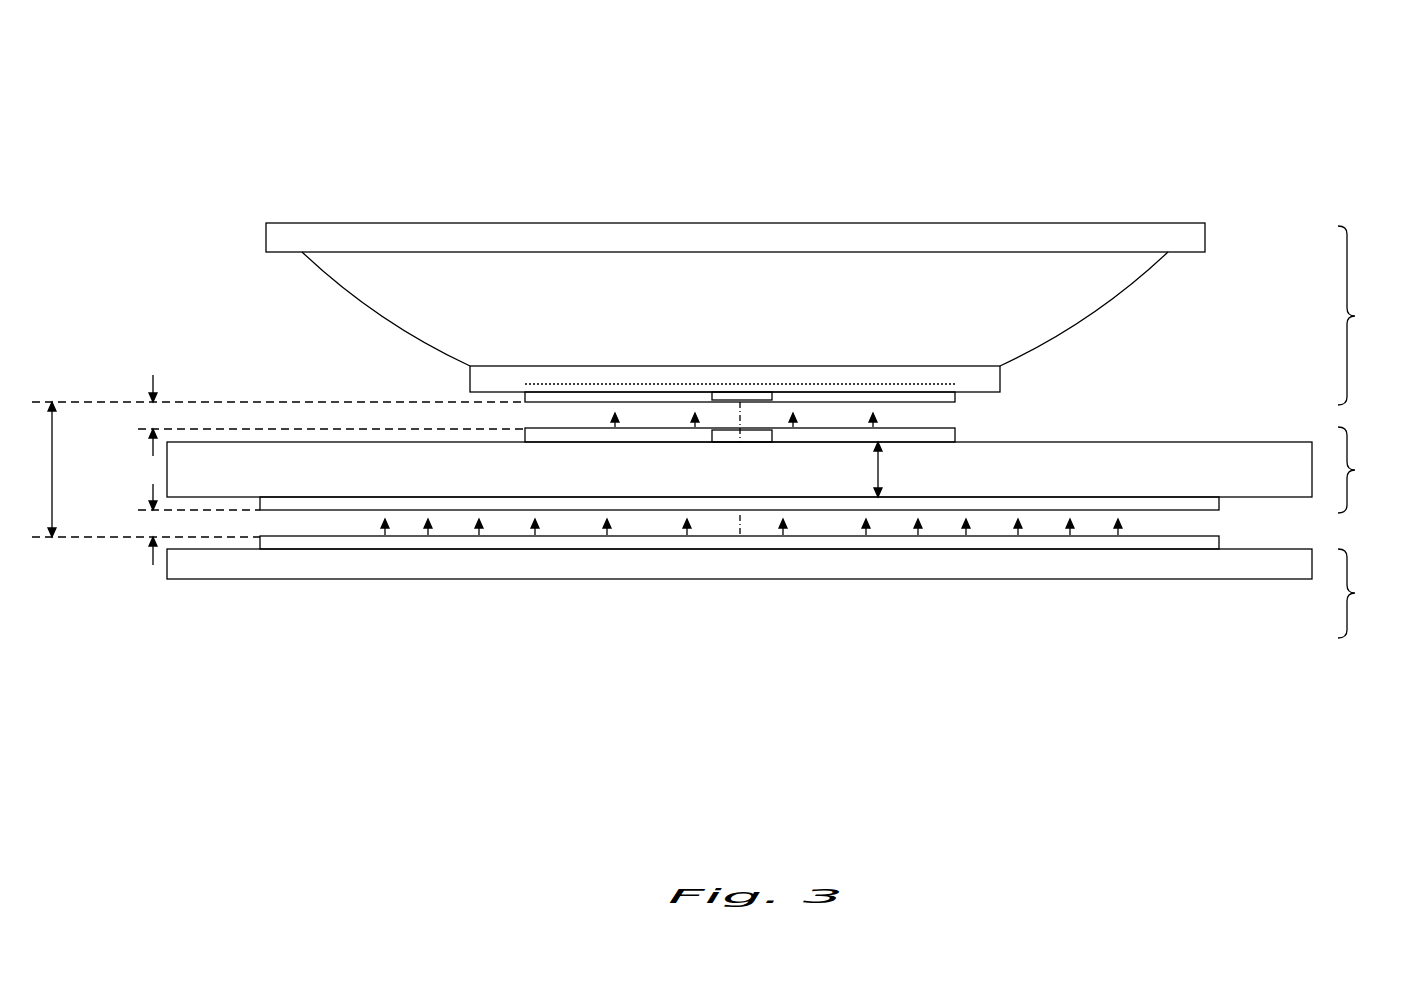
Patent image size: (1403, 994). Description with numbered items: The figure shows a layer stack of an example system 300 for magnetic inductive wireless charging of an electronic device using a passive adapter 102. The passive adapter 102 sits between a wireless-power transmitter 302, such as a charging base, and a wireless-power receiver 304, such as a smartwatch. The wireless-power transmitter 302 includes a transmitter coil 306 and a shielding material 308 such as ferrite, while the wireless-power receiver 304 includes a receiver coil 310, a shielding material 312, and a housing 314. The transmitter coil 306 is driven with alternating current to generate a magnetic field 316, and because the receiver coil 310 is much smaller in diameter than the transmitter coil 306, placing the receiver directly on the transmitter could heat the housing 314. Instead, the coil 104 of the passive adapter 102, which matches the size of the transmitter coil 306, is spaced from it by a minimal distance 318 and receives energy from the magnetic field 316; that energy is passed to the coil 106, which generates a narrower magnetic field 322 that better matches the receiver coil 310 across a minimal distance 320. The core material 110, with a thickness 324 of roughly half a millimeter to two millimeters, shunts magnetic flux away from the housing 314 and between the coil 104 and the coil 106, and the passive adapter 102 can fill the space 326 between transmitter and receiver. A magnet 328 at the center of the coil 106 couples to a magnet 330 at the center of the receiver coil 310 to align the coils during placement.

The system 300 is at (166, 58).
The wireless-power transmitter 302 is at (785, 587).
The wireless-power receiver 304 is at (852, 315).
The transmitter coil 306 is at (1125, 537).
The shielding material 308 is at (1017, 580).
The receiver coil 310 is at (875, 402).
The shielding material 312 is at (600, 366).
The housing 314 is at (1136, 300).
The magnetic field 316 is at (537, 529).
The distance 318 is at (153, 490).
The distance 320 is at (153, 380).
The magnetic field 322 is at (693, 428).
The thickness 324 is at (878, 482).
The space 326 is at (52, 490).
The magnet 328 is at (712, 442).
The magnet 330 is at (723, 385).
The passive adapter 102 is at (785, 457).
The coil 104 is at (1062, 510).
The coil 106 is at (955, 428).
The core material 110 is at (1207, 442).